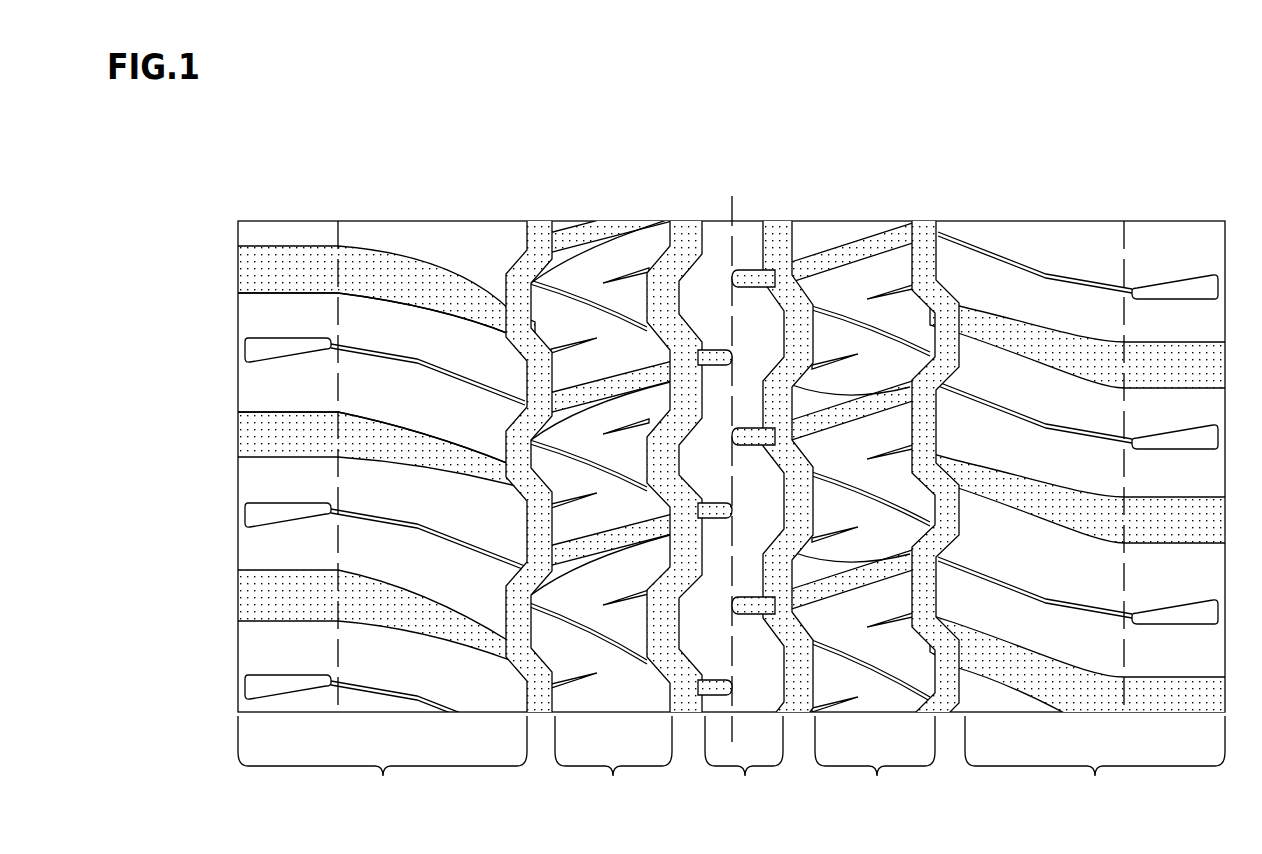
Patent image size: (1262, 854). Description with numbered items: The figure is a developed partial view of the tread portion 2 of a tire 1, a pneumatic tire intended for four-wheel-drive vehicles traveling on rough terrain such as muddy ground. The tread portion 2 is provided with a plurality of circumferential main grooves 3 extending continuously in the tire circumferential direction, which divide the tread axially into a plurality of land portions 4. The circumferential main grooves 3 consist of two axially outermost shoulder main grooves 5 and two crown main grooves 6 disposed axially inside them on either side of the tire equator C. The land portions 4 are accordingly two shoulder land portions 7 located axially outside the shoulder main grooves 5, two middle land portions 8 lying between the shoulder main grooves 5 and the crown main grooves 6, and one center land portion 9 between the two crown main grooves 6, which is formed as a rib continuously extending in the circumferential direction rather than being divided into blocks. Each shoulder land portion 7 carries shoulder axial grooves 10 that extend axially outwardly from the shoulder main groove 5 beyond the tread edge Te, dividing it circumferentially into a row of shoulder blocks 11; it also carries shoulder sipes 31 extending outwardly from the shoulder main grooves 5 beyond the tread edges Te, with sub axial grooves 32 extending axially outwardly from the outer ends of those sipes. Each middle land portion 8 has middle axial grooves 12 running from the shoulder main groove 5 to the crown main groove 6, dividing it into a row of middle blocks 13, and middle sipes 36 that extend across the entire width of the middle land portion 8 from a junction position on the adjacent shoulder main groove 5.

The tire 1 is at (997, 153).
The tread portion 2 is at (1028, 173).
The circumferential main grooves 3 is at (737, 435).
The land portions 4 is at (731, 542).
The shoulder main grooves 5 is at (540, 243).
The crown main grooves 6 is at (685, 243).
The shoulder land portions 7 is at (731, 765).
The middle land portions 8 is at (745, 765).
The center land portion 9 is at (740, 542).
The shoulder axial grooves 10 is at (417, 288).
The shoulder blocks 11 is at (433, 409).
The middle axial grooves 12 is at (615, 380).
The middle blocks 13 is at (579, 483).
The shoulder sipes 31 is at (377, 354).
The sub axial grooves 32 is at (287, 348).
The middle sipes 36 is at (572, 290).
The tire equator C is at (734, 453).
The tread edge Te is at (335, 243).